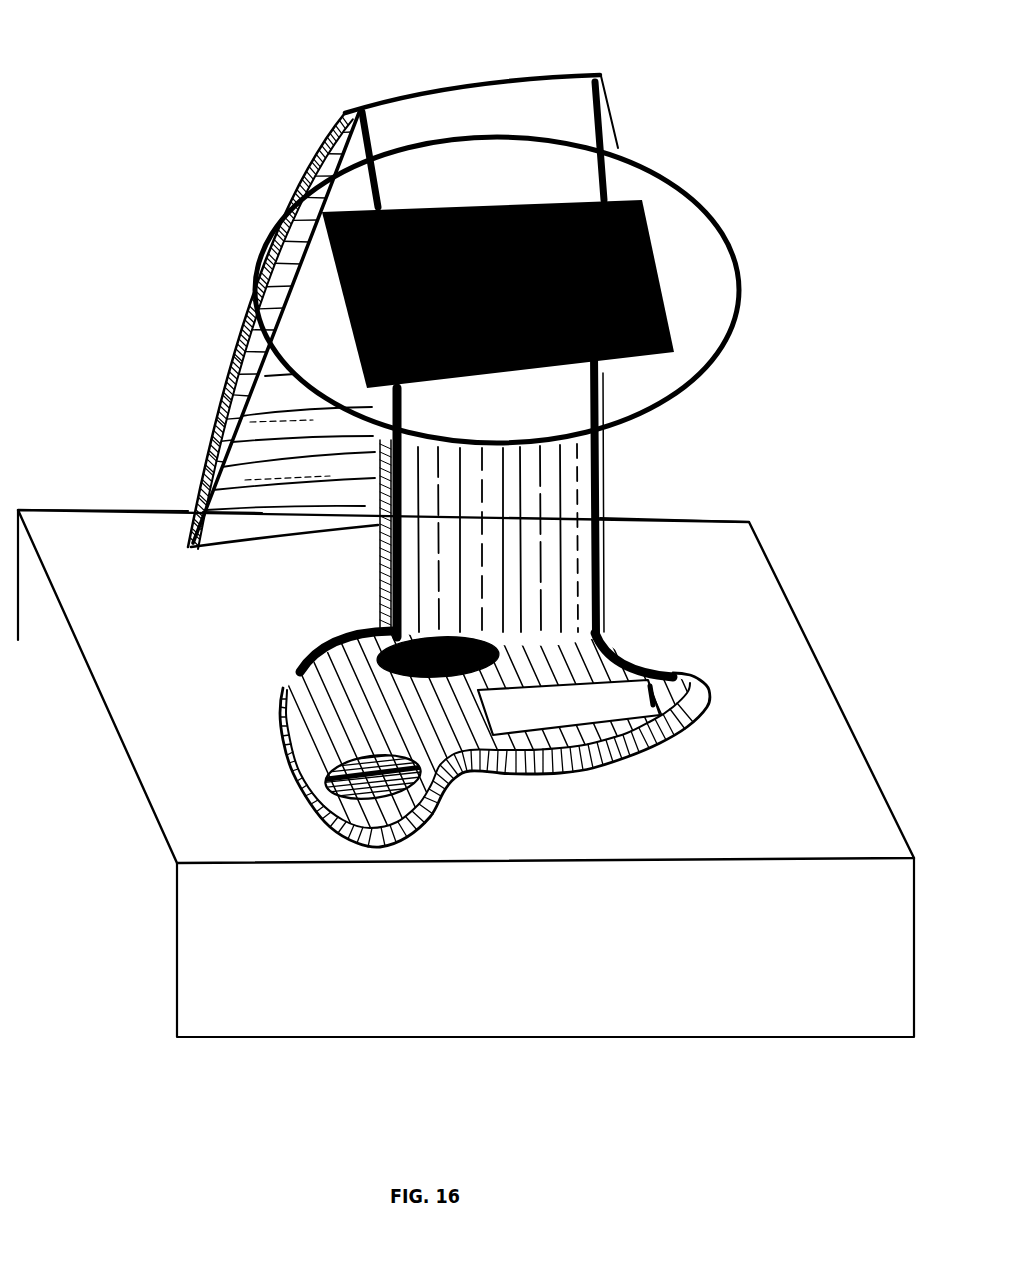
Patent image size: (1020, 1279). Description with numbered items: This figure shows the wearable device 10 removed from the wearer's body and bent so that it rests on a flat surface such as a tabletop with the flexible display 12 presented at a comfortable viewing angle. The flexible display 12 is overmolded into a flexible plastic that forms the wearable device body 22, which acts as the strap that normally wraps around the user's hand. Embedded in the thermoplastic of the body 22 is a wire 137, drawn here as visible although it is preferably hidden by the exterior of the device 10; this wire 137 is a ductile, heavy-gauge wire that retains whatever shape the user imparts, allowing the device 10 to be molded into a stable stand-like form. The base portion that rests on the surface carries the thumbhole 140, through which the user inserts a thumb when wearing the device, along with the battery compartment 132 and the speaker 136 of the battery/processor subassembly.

The wearable device 10 is at (440, 439).
The flexible display 12 is at (303, 183).
The wearable device body 22 is at (603, 81).
The battery compartment 132 is at (594, 705).
The speaker 136 is at (335, 764).
The wire 137 is at (596, 513).
The thumbhole 140 is at (378, 670).